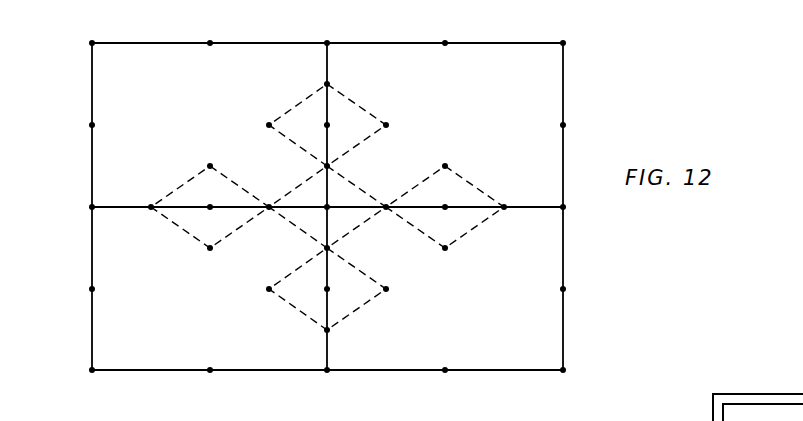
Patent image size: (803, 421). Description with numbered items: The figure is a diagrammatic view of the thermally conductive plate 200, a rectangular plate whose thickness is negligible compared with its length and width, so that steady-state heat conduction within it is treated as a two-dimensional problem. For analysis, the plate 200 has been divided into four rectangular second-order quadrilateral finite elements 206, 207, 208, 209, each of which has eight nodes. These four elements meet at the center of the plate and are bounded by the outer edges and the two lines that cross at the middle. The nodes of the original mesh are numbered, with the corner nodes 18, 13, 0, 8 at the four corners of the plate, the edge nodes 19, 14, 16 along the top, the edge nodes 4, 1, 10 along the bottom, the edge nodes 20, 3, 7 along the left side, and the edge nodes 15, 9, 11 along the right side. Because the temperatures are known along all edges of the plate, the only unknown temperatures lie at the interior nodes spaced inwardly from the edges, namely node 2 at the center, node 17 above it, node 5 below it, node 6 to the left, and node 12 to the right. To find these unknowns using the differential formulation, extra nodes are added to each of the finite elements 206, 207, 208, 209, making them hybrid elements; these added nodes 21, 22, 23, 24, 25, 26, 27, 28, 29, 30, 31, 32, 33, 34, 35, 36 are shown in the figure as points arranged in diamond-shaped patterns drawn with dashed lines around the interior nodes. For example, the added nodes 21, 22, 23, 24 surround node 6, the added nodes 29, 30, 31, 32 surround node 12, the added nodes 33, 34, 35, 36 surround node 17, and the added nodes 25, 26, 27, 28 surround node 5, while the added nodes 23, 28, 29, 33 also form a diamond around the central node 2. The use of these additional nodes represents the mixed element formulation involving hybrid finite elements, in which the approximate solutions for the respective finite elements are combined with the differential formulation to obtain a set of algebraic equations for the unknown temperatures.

The thermally conductive plate 200 is at (155, 43).
The rectangular finite element 206 is at (97, 335).
The rectangular finite element 207 is at (558, 333).
The rectangular finite element 208 is at (557, 88).
The rectangular finite element 209 is at (97, 78).
The node 0 is at (92, 384).
The node 1 is at (328, 384).
The node 2 is at (336, 195).
The node 3 is at (81, 208).
The node 4 is at (209, 384).
The node 5 is at (338, 290).
The node 6 is at (209, 194).
The node 7 is at (81, 290).
The node 8 is at (563, 384).
The node 9 is at (572, 208).
The node 10 is at (447, 384).
The node 11 is at (579, 290).
The node 12 is at (445, 194).
The node 13 is at (565, 30).
The node 14 is at (329, 30).
The node 15 is at (579, 126).
The node 16 is at (447, 30).
The node 17 is at (344, 126).
The node 18 is at (94, 30).
The node 19 is at (212, 30).
The node 20 is at (78, 126).
The additional node 21 is at (148, 220).
The additional node 22 is at (203, 261).
The additional node 23 is at (271, 221).
The additional node 24 is at (199, 155).
The additional node 25 is at (263, 302).
The additional node 26 is at (343, 338).
The additional node 27 is at (401, 298).
The additional node 28 is at (350, 248).
The additional node 29 is at (391, 193).
The additional node 30 is at (459, 259).
The additional node 31 is at (518, 195).
The additional node 32 is at (458, 155).
The additional node 33 is at (309, 168).
The additional node 34 is at (399, 113).
The additional node 35 is at (314, 74).
The additional node 36 is at (256, 115).